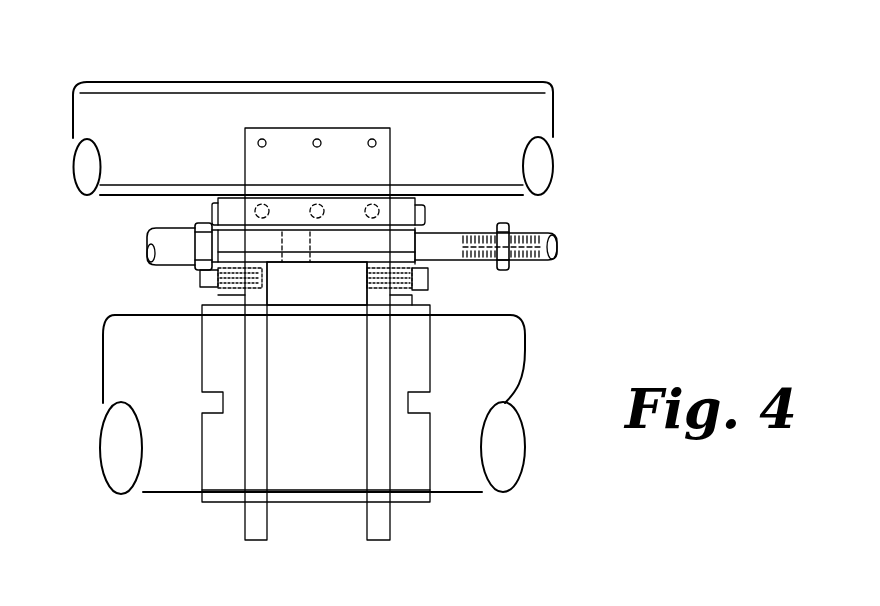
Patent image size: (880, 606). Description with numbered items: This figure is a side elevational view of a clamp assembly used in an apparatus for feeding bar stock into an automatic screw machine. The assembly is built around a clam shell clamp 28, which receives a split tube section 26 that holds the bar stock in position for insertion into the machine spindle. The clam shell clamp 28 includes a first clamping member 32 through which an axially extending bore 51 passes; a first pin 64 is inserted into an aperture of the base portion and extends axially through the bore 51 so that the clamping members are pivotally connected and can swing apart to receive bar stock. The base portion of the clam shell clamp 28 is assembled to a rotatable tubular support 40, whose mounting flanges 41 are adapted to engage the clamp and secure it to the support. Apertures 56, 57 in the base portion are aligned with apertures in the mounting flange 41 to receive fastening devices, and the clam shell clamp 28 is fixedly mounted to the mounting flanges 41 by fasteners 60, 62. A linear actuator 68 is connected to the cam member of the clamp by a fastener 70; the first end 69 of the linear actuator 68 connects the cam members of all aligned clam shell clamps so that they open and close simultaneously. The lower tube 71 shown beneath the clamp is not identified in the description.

The split tube section 26 is at (528, 122).
The clam shell clamp 28 is at (259, 148).
The first clamping member 32 is at (382, 165).
The axially extending bore 51 is at (253, 208).
The fastener 62 is at (203, 278).
The first pin 64 is at (430, 215).
The linear actuator 68 is at (167, 240).
The first end 69 is at (503, 223).
The fastener 70 is at (542, 245).
The aperture 57 is at (218, 285).
The fastener 60 is at (423, 278).
The aperture 56 is at (407, 287).
The rotatable tubular support 40 is at (230, 502).
The mounting flange 41 is at (383, 528).
The lower horizontal tube 71 is at (513, 448).